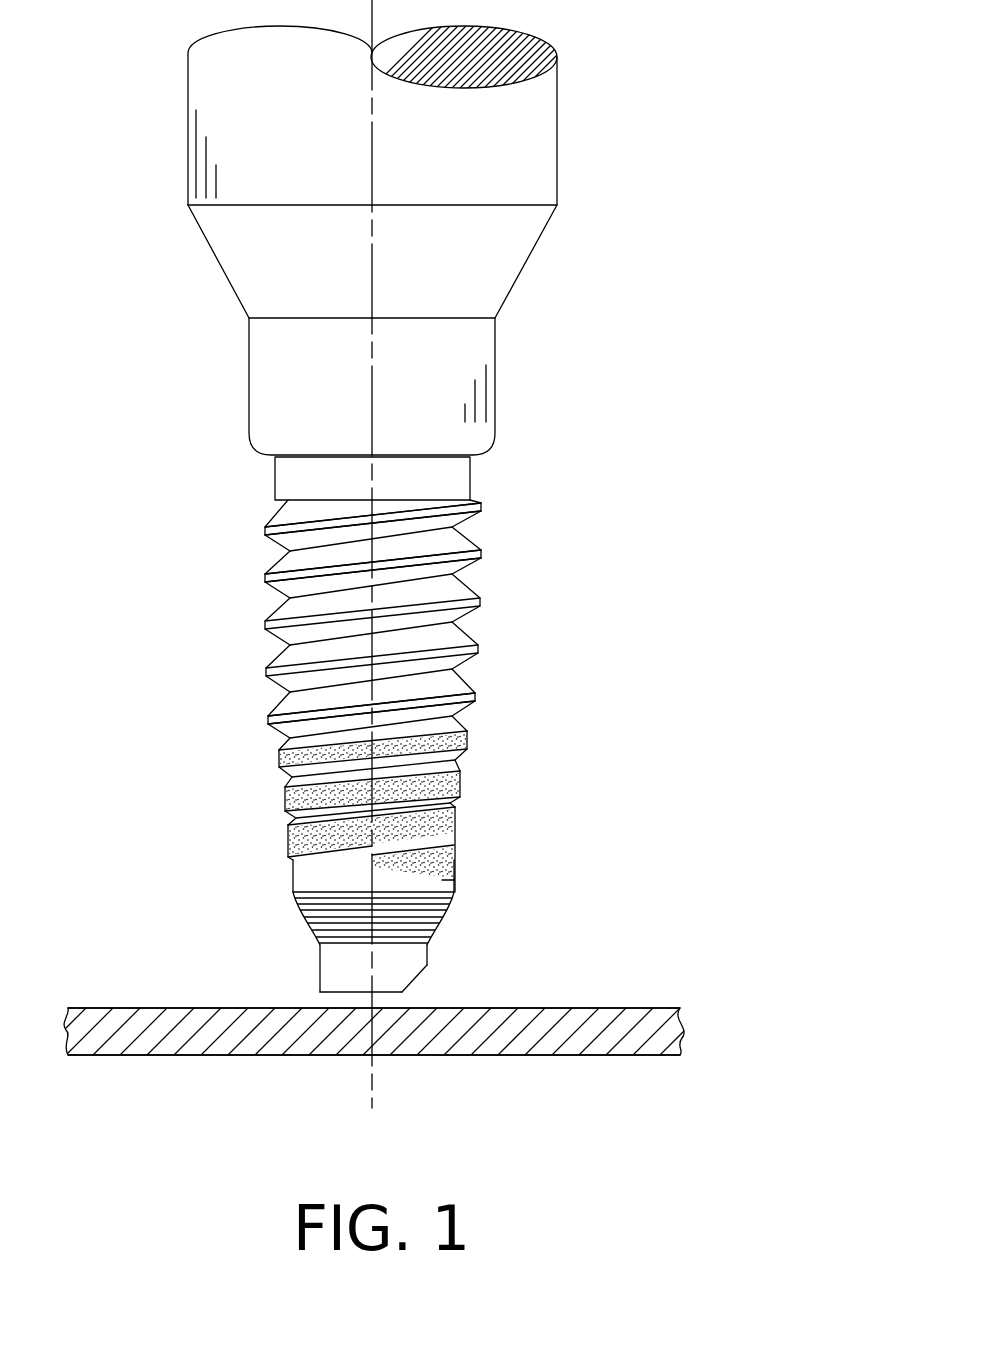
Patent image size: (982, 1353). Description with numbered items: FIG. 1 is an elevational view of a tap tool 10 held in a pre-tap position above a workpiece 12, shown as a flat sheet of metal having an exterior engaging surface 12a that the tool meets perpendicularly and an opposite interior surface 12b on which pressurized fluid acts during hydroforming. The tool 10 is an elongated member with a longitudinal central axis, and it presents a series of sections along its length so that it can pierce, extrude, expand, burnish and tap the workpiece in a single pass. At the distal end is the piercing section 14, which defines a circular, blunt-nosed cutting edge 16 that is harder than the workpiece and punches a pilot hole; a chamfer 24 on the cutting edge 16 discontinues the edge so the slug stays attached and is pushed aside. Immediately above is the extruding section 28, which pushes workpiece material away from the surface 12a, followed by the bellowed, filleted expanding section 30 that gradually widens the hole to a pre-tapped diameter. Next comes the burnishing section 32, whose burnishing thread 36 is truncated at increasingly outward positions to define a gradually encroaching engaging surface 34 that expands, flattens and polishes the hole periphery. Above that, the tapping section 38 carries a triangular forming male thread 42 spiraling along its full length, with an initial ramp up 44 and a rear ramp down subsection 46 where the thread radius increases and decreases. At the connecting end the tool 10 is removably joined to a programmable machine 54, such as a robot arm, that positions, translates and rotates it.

The tap tool 10 is at (126, 336).
The workpiece 12 is at (685, 1035).
The exterior engaging surface 12a is at (638, 1008).
The interior surface 12b is at (640, 1055).
The piercing section 14 is at (435, 962).
The cutting edge 16 is at (337, 993).
The chamfer 24 is at (415, 977).
The extruding section 28 is at (312, 947).
The expanding section 30 is at (285, 895).
The burnishing section 32 is at (474, 782).
The engaging surface 34 is at (444, 823).
The burnishing thread 36 is at (303, 772).
The tapping section 38 is at (484, 672).
The forming male thread 42 is at (303, 583).
The initial ramp up 44 is at (297, 723).
The rear ramp down subsection 46 is at (298, 535).
The programmable machine 54 is at (500, 398).